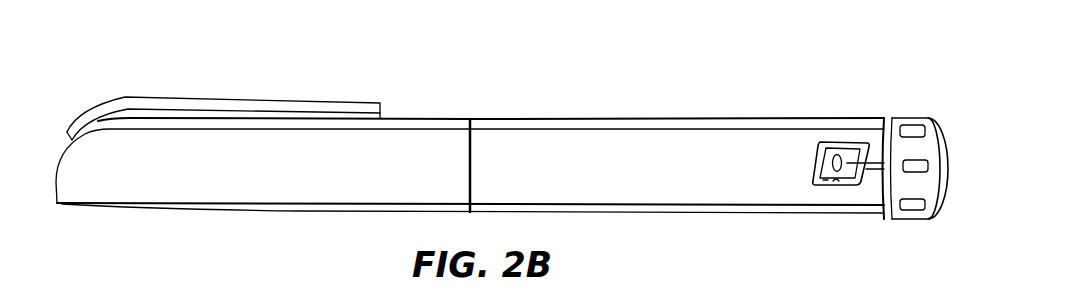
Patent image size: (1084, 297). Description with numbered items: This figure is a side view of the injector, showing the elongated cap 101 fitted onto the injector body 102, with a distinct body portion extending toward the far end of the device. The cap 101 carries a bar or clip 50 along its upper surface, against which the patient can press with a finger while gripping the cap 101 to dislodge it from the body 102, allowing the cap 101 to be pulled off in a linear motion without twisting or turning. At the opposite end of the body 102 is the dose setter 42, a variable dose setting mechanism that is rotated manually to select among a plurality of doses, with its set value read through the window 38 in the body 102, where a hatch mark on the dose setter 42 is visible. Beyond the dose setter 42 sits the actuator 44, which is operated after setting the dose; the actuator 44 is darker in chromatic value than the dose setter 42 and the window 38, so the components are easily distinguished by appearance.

The clip 50 is at (178, 88).
The cap 101 is at (266, 213).
The injector body 102 is at (557, 112).
The window 38 is at (843, 137).
The dose setter 42 is at (915, 113).
The actuator 44 is at (950, 203).